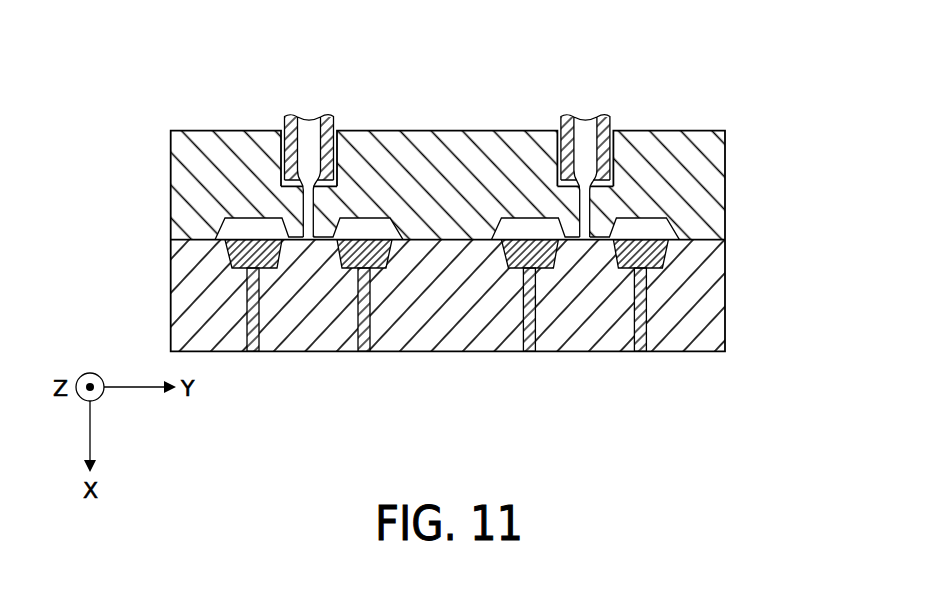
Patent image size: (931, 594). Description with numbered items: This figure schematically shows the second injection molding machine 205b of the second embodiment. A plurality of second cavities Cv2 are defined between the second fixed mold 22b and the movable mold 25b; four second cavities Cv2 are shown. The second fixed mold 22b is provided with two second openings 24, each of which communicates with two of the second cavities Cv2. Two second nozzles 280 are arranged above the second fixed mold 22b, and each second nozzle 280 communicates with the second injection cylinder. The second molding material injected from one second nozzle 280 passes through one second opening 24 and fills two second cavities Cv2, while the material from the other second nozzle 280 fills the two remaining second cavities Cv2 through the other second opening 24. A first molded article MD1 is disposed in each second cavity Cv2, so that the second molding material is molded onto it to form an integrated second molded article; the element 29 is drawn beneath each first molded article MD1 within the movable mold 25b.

The second injection molding machine 205b is at (173, 59).
The second fixed mold 22b is at (708, 150).
The movable mold 25b is at (688, 323).
The second nozzle 280 is at (288, 154).
The second opening 24 is at (309, 181).
The second cavity Cv2 is at (342, 223).
The first molded article MD1 is at (668, 256).
The pillar / support 29 is at (644, 328).